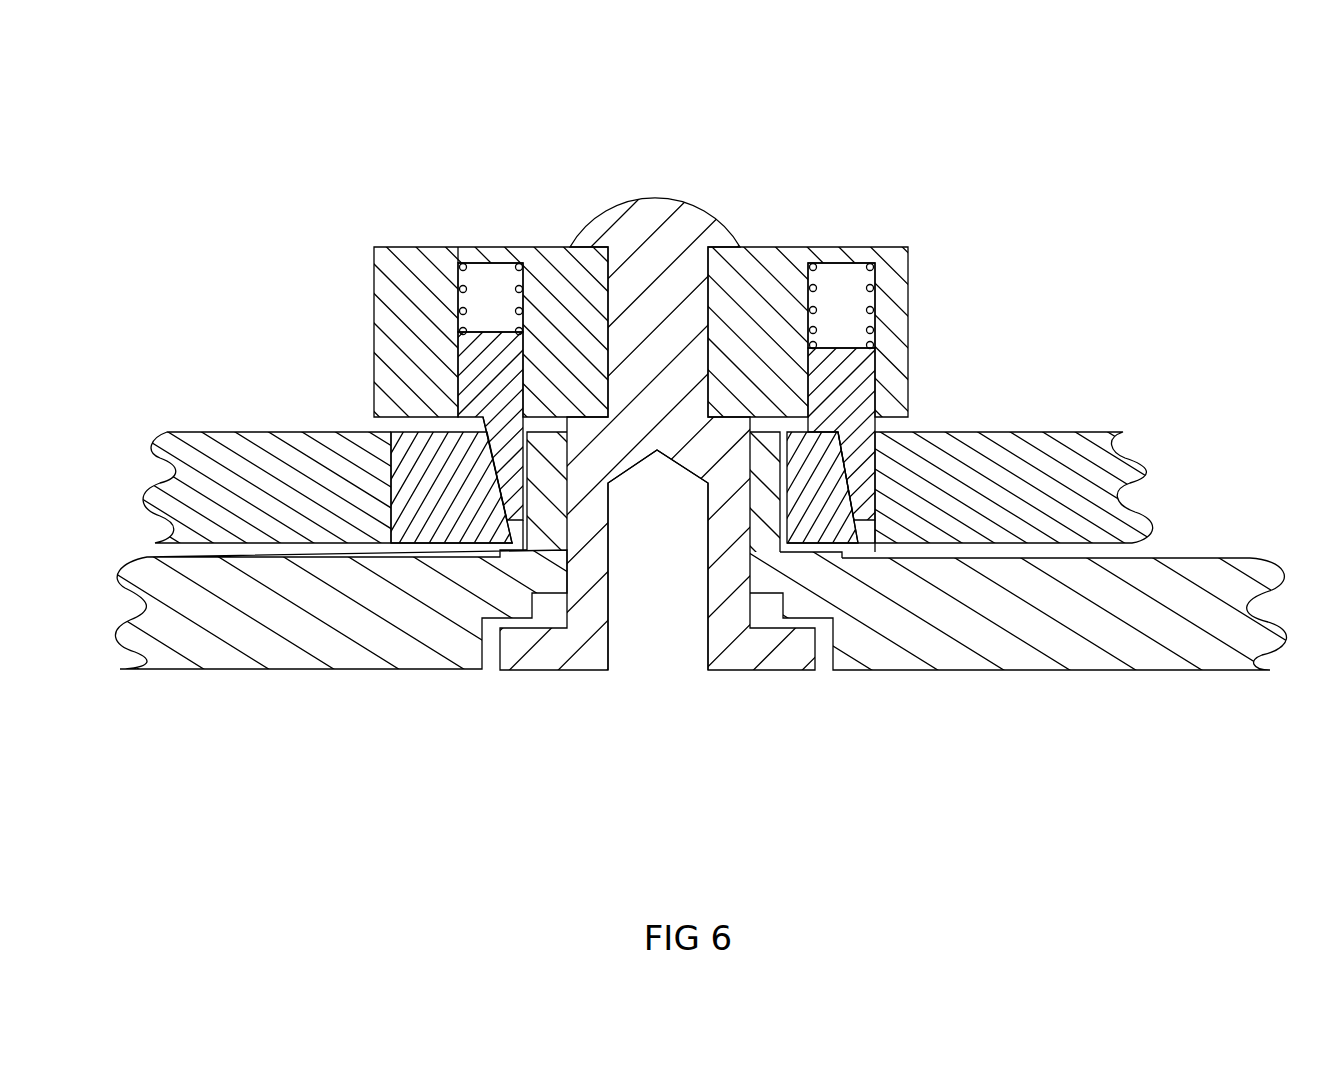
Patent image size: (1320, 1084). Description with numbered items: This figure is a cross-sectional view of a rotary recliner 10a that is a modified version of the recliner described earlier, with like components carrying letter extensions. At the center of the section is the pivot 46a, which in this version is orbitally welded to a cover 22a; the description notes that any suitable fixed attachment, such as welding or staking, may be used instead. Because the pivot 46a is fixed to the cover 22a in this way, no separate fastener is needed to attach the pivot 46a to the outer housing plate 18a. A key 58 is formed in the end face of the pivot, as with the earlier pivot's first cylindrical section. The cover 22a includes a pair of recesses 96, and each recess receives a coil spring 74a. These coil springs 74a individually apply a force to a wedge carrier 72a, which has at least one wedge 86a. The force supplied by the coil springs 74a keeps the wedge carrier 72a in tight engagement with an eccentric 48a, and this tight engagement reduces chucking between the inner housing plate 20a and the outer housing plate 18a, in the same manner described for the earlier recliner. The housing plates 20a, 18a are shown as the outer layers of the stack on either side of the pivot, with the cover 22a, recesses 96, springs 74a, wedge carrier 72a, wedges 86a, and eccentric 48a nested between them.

The rotary recliner 10a is at (1077, 190).
The outer housing plate 18a is at (212, 678).
The inner housing plate 20a is at (237, 431).
The cover 22a is at (788, 245).
The pivot 46a is at (667, 195).
The eccentric 48a is at (497, 552).
The key 58 is at (660, 646).
The wedge carrier 72a is at (457, 380).
The coil spring 74a is at (462, 289).
The wedge 86a is at (509, 470).
The recess 96 is at (480, 280).